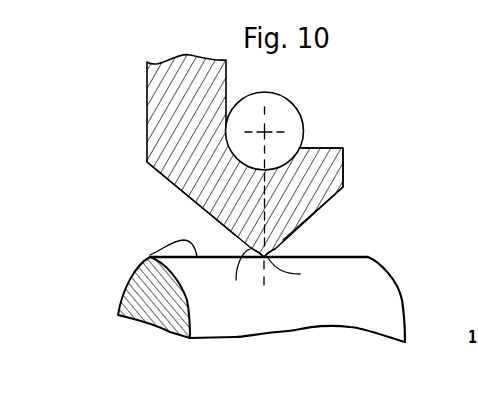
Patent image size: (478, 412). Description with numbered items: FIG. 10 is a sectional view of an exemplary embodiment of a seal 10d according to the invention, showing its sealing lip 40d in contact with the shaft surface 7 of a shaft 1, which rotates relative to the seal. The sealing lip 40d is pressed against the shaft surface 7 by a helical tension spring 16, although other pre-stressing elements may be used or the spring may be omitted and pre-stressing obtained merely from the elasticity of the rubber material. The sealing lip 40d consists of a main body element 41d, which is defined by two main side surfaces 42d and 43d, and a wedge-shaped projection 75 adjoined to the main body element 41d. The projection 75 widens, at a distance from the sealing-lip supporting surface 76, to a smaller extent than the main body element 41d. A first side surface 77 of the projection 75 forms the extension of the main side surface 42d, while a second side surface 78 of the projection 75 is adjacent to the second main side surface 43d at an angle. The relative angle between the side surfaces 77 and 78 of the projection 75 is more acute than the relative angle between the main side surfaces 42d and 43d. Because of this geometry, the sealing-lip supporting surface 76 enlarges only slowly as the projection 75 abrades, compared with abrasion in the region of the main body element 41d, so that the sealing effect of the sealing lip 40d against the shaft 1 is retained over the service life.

The seal 10d is at (147, 110).
The helical tension spring 16 is at (283, 118).
The sealing lip 40d is at (183, 192).
The main body element 41d is at (344, 159).
The main side surface 42d is at (220, 222).
The second main side surface 43d is at (284, 239).
The projection 75 is at (254, 251).
The second side surface 78 is at (273, 251).
The sealing-lip supporting surface 76 is at (300, 274).
The shaft surface 7 is at (150, 255).
The shaft 1 is at (207, 304).
The first side surface 77 is at (235, 280).